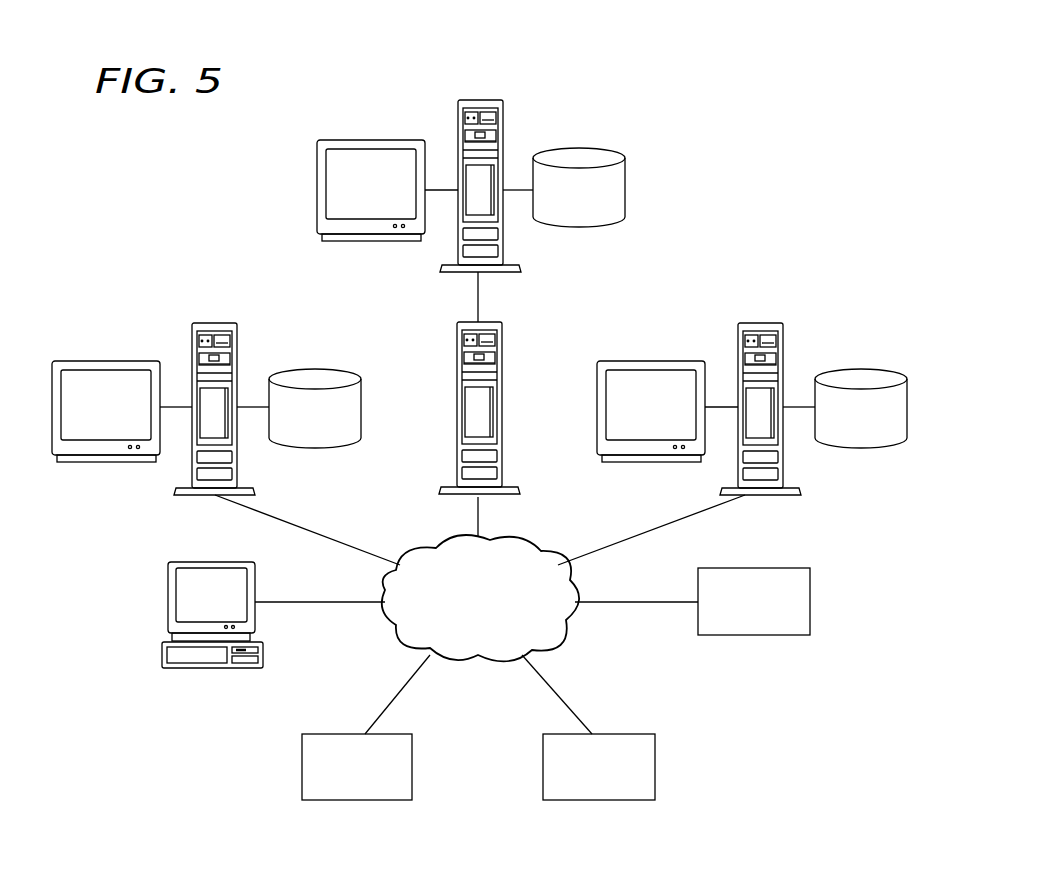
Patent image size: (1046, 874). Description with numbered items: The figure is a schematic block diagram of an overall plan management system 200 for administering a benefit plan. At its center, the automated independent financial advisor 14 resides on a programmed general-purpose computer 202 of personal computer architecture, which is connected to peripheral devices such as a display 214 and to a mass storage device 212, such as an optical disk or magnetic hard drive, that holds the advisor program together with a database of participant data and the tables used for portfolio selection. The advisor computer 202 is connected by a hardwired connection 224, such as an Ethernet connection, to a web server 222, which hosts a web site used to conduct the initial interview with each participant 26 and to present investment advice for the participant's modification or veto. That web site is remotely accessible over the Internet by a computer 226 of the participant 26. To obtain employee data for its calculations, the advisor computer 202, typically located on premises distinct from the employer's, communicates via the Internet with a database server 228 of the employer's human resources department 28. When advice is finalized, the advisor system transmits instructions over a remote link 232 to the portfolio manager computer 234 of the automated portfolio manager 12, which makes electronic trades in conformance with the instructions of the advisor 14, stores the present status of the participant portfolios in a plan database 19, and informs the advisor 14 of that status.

The overall plan management system 200 is at (780, 101).
The automated independent financial advisor 14 is at (336, 92).
The display 214 is at (315, 190).
The general-purpose computer 202 is at (458, 128).
The mass storage device 212 is at (625, 185).
The human resources department 28 is at (95, 304).
The database server 228 is at (212, 322).
The automated portfolio manager 12 is at (860, 306).
The portfolio manager computer 234 is at (762, 322).
The plan database 19 is at (858, 449).
The hardwired connection 224 is at (475, 303).
The web server 222 is at (502, 375).
The remote link 232 is at (467, 661).
The participant 26 is at (138, 594).
The participant computer 226 is at (160, 653).